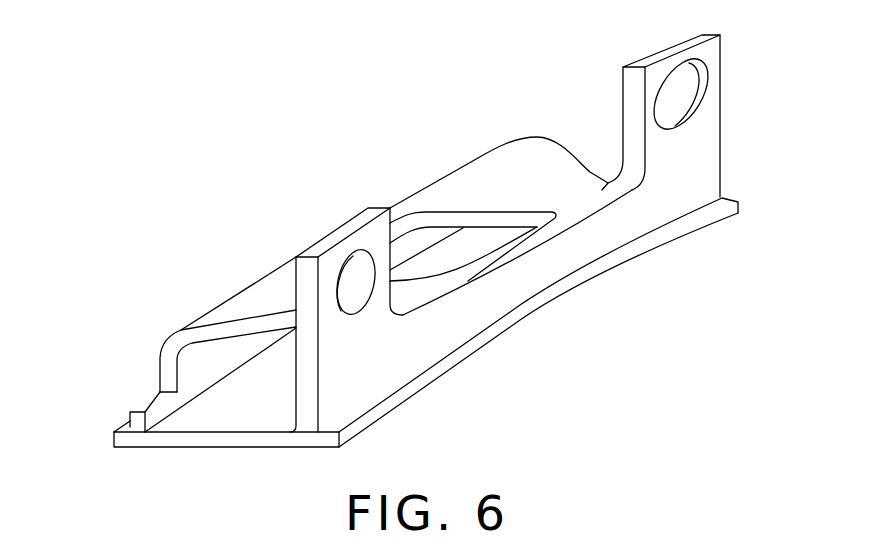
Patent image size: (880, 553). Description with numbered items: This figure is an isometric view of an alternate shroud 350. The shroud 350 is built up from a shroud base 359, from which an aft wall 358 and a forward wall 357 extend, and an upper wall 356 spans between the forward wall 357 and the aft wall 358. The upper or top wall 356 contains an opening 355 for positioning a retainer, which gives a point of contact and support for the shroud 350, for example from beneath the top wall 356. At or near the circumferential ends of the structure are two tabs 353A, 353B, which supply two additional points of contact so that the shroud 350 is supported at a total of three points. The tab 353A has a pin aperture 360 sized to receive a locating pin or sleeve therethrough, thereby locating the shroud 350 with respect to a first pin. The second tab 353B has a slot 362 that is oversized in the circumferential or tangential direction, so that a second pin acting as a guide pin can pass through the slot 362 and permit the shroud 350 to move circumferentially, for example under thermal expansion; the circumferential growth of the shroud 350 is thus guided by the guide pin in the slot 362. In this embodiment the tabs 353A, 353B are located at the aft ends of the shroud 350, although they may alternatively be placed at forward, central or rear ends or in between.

The shroud 350 is at (235, 145).
The tab 353A is at (377, 228).
The second tab 353B is at (708, 50).
The opening 355 is at (457, 195).
The upper wall 356 is at (503, 160).
The forward wall 357 is at (158, 367).
The aft wall 358 is at (533, 272).
The shroud base 359 is at (242, 437).
The pin aperture 360 is at (356, 298).
The slot 362 is at (677, 127).